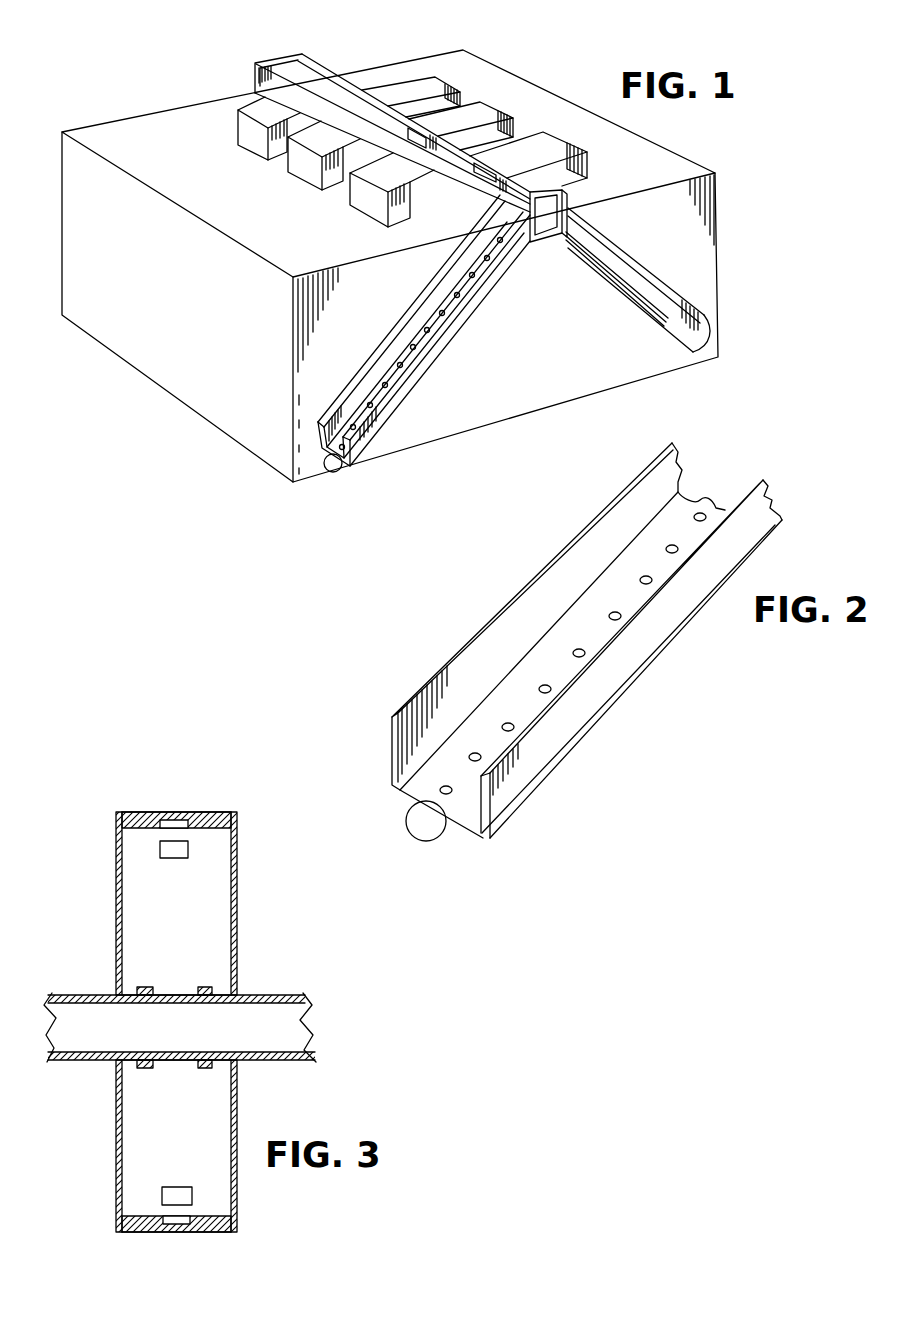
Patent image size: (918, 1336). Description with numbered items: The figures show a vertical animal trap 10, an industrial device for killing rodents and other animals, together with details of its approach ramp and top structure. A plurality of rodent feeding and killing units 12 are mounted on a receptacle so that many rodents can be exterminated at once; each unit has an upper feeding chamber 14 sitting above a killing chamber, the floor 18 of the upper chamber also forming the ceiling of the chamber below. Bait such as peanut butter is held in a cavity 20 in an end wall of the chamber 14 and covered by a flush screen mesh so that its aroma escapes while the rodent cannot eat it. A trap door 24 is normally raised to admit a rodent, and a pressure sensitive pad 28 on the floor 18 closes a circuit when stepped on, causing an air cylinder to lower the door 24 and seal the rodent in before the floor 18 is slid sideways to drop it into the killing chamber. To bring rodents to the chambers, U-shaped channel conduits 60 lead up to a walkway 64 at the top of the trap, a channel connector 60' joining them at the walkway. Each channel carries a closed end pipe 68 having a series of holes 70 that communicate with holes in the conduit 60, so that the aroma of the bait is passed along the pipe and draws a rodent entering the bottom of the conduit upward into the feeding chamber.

In FIG. 1, the vertical animal trap 10 is at (198, 70).
In FIG. 1, the rodent feeding and killing unit 12 is at (258, 132).
In FIG. 1, the upper feeding chamber 14 is at (425, 87).
In FIG. 3, the upper feeding chamber 14 is at (116, 907).
In FIG. 3, the floor 18 is at (190, 946).
In FIG. 3, the cavity 20 is at (173, 822).
In FIG. 3, the trap door 24 is at (180, 990).
In FIG. 3, the pressure sensitive pad 28 is at (173, 858).
In FIG. 1, the conduit 60 is at (514, 330).
In FIG. 2, the conduit 60 is at (587, 640).
In FIG. 1, the channel connector 60' is at (542, 251).
In FIG. 1, the walkway 64 is at (317, 85).
In FIG. 3, the walkway 64 is at (288, 1033).
In FIG. 1, the closed end pipe 68 is at (320, 470).
In FIG. 2, the closed end pipe 68 is at (435, 845).
In FIG. 1, the holes 70 is at (352, 452).
In FIG. 2, the holes 70 is at (470, 760).